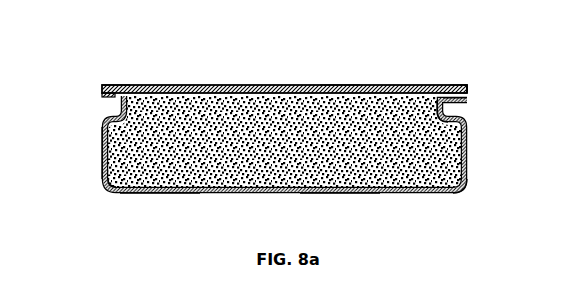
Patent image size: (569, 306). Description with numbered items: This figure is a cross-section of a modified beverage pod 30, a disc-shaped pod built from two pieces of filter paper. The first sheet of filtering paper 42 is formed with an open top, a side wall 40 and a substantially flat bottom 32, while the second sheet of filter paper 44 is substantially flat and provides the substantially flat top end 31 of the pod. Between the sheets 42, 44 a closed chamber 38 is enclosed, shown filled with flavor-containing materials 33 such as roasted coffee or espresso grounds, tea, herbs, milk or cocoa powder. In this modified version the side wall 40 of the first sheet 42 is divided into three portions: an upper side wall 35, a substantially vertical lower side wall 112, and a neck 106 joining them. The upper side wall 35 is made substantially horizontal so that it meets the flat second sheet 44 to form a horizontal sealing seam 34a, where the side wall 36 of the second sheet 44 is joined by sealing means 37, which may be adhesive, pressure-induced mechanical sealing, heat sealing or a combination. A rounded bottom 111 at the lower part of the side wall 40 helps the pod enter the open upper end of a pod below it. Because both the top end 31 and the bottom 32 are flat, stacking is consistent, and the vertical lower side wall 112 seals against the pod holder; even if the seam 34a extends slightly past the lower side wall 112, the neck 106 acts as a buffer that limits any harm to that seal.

The beverage pod 30 is at (80, 77).
The bottom of second sheet 31 is at (163, 85).
The bottom of first sheet 32 is at (157, 195).
The flavor-containing materials 33 is at (260, 172).
The horizontal sealing seam 34a is at (470, 73).
The upper side wall 35 is at (468, 96).
The vertical side wall of second sheet 36 is at (468, 85).
The sealing means 37 is at (468, 89).
The closed chamber 38 is at (110, 180).
The vertical side wall of first sheet 40 is at (100, 143).
The first sheet of filtering paper 42 is at (343, 203).
The second sheet of filter paper 44 is at (341, 75).
The neck 106 is at (445, 103).
The rounded bottom 111 is at (460, 193).
The substantially vertical lower side wall 112 is at (467, 150).